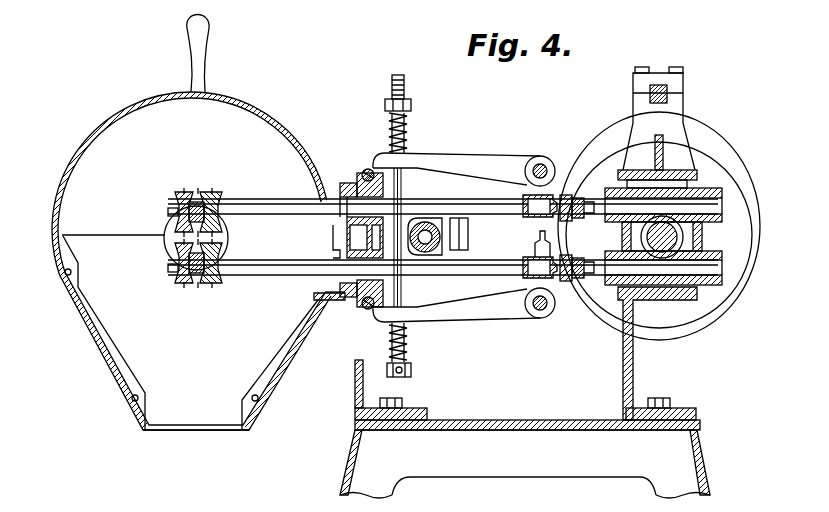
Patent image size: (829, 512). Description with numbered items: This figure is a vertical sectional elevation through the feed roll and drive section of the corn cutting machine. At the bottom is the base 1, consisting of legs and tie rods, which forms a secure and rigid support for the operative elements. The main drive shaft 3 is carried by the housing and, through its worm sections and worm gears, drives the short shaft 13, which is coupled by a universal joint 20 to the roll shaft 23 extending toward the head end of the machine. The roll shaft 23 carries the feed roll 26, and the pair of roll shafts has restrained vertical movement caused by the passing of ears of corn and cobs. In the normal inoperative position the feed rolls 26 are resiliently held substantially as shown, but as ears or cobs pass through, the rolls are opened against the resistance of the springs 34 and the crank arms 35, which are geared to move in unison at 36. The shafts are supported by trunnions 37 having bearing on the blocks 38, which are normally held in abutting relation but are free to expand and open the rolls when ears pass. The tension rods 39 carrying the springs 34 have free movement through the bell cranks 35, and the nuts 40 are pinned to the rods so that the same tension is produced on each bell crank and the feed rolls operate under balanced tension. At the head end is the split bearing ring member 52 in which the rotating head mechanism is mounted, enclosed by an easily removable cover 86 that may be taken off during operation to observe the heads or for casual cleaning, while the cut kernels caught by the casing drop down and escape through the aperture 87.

The base 1 is at (525, 429).
The main drive shaft 3 is at (685, 236).
The short shaft 13 is at (714, 207).
The universal joint 20 is at (574, 258).
The roll shaft 23 is at (478, 266).
The feed roll 26 is at (172, 202).
The spring 34 is at (410, 133).
The crank arm 35 is at (490, 160).
The gearing of crank arms 36 is at (534, 238).
The trunnion 37 is at (364, 170).
The block 38 is at (331, 202).
The tension rod 39 is at (403, 288).
The nut 40 is at (412, 371).
The ring member 52 is at (99, 128).
The removable cover 86 is at (156, 168).
The aperture 87 is at (205, 430).